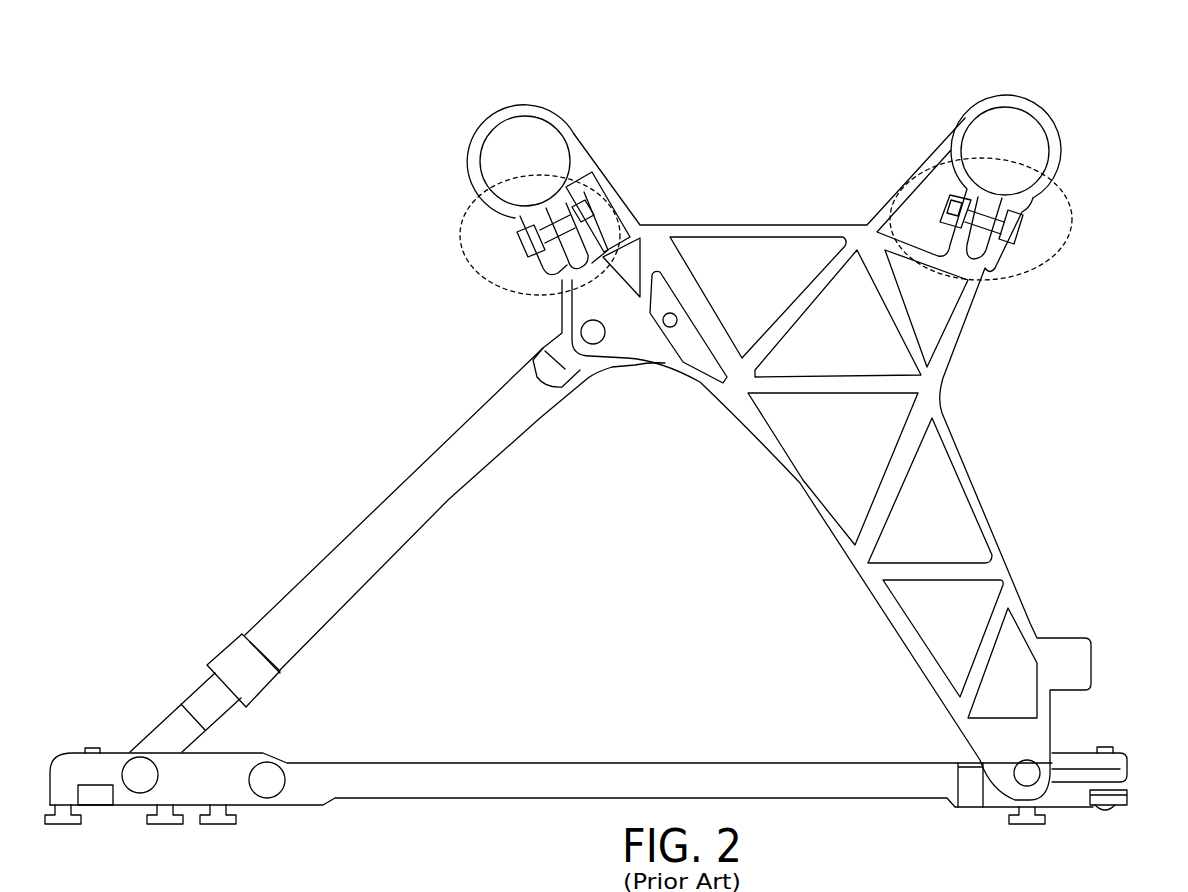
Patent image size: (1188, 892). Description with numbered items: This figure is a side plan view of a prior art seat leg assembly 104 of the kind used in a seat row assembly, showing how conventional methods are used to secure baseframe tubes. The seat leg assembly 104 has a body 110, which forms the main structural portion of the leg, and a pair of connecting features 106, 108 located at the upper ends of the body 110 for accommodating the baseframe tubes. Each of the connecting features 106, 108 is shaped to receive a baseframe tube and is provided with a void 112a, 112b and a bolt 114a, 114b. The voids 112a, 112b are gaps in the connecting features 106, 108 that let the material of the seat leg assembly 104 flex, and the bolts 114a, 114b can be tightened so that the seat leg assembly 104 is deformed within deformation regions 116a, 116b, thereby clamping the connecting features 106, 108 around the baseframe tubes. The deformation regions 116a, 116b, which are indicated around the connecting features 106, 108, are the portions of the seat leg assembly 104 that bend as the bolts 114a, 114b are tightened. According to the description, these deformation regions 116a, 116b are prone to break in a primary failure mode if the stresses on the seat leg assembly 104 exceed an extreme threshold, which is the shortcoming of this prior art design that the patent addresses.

The seat leg assembly 104 is at (832, 84).
The connecting feature 106 is at (1042, 120).
The connecting feature 108 is at (529, 117).
The body 110 is at (856, 522).
The void 112a is at (1063, 190).
The void 112b is at (530, 218).
The bolt 114a is at (1047, 223).
The bolt 114b is at (523, 243).
The deformation region 116a is at (1013, 283).
The deformation region 116b is at (490, 280).